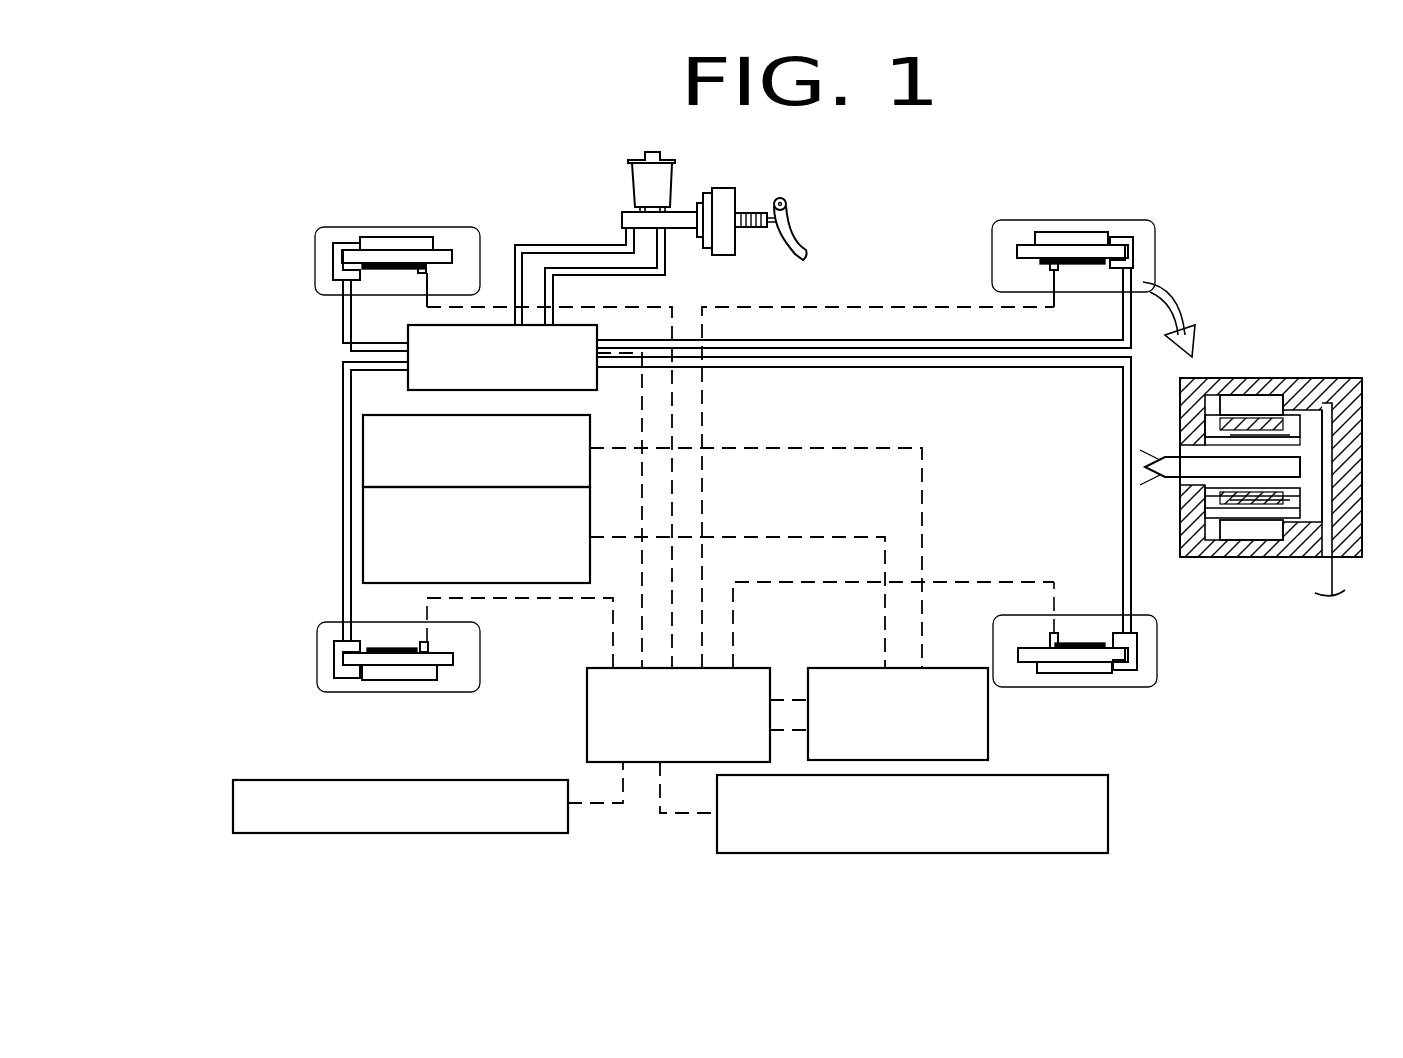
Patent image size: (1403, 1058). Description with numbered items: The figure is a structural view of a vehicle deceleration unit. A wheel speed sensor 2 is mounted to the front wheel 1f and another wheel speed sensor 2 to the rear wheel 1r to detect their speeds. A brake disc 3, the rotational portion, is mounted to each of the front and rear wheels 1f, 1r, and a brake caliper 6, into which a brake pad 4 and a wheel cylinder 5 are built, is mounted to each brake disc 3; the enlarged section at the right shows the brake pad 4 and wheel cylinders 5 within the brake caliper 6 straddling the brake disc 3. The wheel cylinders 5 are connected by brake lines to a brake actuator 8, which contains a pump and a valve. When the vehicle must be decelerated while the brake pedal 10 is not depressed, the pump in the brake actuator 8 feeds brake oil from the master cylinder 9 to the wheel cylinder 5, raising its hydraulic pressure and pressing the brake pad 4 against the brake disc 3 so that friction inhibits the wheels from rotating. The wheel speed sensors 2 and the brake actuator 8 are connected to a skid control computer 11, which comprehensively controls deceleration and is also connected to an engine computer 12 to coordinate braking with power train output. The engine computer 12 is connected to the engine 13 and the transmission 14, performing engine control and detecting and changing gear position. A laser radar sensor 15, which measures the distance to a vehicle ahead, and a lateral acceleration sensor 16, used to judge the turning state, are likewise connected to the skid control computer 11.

The front wheel 1f is at (380, 227).
The rear wheel 1r is at (1095, 219).
The wheel speed sensor 2 is at (428, 271).
The brake disc 3 is at (436, 249).
The brake pad 4 is at (1215, 473).
The wheel cylinder 5 is at (1247, 395).
The brake caliper 6 is at (333, 259).
The brake actuator 8 is at (408, 381).
The master cylinder 9 is at (625, 213).
The brake pedal 10 is at (802, 251).
The skid control computer 11 is at (587, 733).
The engine computer 12 is at (988, 742).
The engine 13 is at (590, 426).
The transmission 14 is at (590, 504).
The laser radar sensor 15 is at (572, 822).
The lateral acceleration sensor 16 is at (1108, 832).